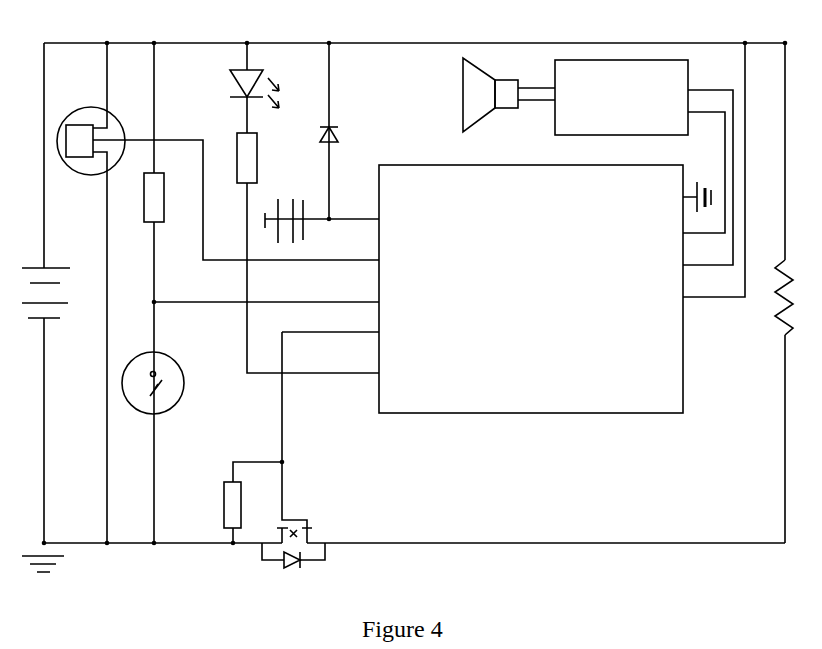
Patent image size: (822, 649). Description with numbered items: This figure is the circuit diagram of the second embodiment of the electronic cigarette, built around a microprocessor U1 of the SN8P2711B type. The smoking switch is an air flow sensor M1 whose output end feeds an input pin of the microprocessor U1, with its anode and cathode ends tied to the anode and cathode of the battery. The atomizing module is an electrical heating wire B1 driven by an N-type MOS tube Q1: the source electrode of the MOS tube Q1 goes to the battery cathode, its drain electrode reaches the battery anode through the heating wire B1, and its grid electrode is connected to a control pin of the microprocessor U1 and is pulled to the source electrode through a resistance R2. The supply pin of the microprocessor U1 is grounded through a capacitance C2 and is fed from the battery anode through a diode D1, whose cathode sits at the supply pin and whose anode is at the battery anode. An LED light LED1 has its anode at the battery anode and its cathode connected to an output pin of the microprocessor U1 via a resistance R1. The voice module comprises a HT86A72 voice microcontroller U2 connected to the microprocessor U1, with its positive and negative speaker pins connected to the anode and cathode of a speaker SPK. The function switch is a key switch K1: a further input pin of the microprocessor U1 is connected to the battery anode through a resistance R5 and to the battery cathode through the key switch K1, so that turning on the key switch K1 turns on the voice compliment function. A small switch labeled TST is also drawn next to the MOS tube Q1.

The air flow sensor M1 is at (218, 293).
The resistance R5 is at (165, 197).
The key switch K1 is at (160, 443).
The LED light LED1 is at (253, 74).
The resistance R1 is at (308, 253).
The diode D1 is at (344, 131).
The capacitance C2 is at (322, 222).
The speaker SPK is at (487, 95).
The voice microcontroller U2 is at (644, 162).
The microprocessor U1 is at (449, 228).
The electrical heating wire B1 is at (772, 297).
The resistance R2 is at (237, 502).
The test switch TST is at (294, 437).
The N-type MOS tube Q1 is at (293, 568).